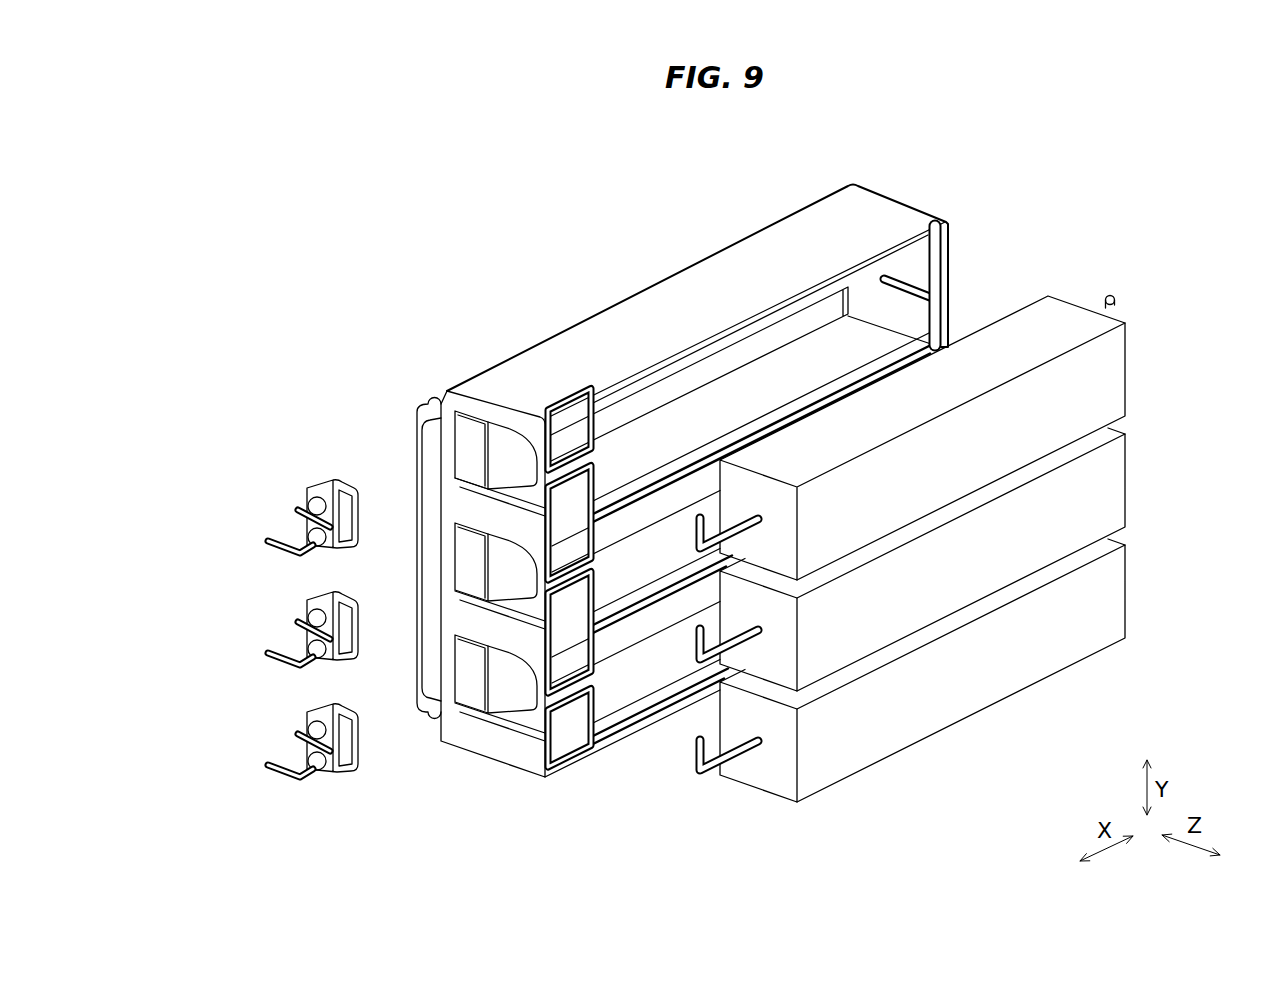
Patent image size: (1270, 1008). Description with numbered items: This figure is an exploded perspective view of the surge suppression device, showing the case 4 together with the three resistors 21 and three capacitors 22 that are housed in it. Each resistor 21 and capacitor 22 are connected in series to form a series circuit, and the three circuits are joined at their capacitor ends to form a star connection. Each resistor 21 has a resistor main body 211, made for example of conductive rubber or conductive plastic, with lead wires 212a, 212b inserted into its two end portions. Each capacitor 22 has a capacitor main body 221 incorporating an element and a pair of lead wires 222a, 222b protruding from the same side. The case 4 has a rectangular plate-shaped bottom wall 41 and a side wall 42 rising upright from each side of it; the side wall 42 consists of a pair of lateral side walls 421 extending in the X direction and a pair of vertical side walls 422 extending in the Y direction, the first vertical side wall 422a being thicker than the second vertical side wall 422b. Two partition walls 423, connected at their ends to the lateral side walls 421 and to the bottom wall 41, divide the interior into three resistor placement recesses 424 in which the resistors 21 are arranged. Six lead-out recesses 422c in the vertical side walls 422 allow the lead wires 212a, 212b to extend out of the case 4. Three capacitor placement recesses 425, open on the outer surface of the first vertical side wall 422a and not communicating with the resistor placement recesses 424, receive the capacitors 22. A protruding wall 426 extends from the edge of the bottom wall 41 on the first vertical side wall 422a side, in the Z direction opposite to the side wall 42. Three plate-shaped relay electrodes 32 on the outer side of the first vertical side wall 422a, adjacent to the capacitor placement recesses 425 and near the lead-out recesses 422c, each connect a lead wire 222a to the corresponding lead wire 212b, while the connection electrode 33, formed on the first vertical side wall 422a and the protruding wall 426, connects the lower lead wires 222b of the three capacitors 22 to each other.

The case 4 is at (668, 300).
The bottom wall 41 is at (709, 366).
The side wall 42 is at (565, 352).
The lateral side wall 421 is at (616, 322).
The vertical side wall 422 is at (569, 578).
The first vertical side wall 422a is at (483, 604).
The second vertical side wall 422b is at (945, 302).
The lead-out recess 422c is at (512, 466).
The partition wall 423 is at (797, 372).
The resistor placement recess 424 is at (769, 322).
The capacitor placement recess 425 is at (470, 435).
The protruding wall 426 is at (418, 428).
The relay electrode 32 is at (500, 455).
The connection electrode 33 is at (437, 580).
The resistor 21 is at (1160, 352).
The resistor main body 211 is at (1045, 410).
The lead wire 212a is at (1113, 305).
The lead wire 212b is at (727, 537).
The capacitor 22 is at (236, 518).
The capacitor main body 221 is at (334, 486).
The lead wire 222a is at (302, 513).
The lead wire 222b is at (275, 543).